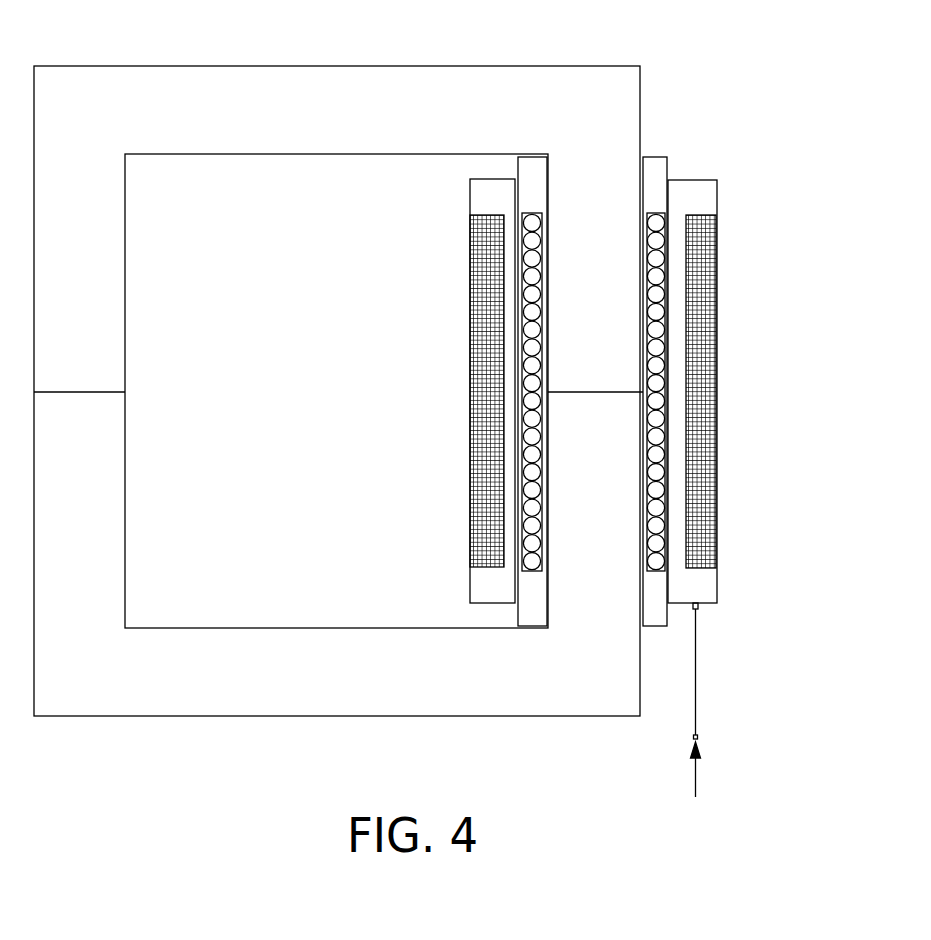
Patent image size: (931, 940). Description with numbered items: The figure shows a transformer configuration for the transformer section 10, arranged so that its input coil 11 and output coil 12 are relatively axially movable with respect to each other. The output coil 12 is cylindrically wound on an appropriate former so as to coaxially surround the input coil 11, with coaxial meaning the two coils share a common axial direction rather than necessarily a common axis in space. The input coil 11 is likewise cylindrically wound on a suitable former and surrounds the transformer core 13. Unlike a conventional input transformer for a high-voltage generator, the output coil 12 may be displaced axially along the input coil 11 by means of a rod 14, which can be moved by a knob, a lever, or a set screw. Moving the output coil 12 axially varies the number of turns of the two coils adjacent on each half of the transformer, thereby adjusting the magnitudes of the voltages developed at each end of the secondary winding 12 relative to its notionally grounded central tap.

The transformer section 10 is at (786, 42).
The input coil 11 is at (652, 222).
The output coil 12 is at (717, 236).
The transformer core 13 is at (623, 125).
The rod 14 is at (696, 668).